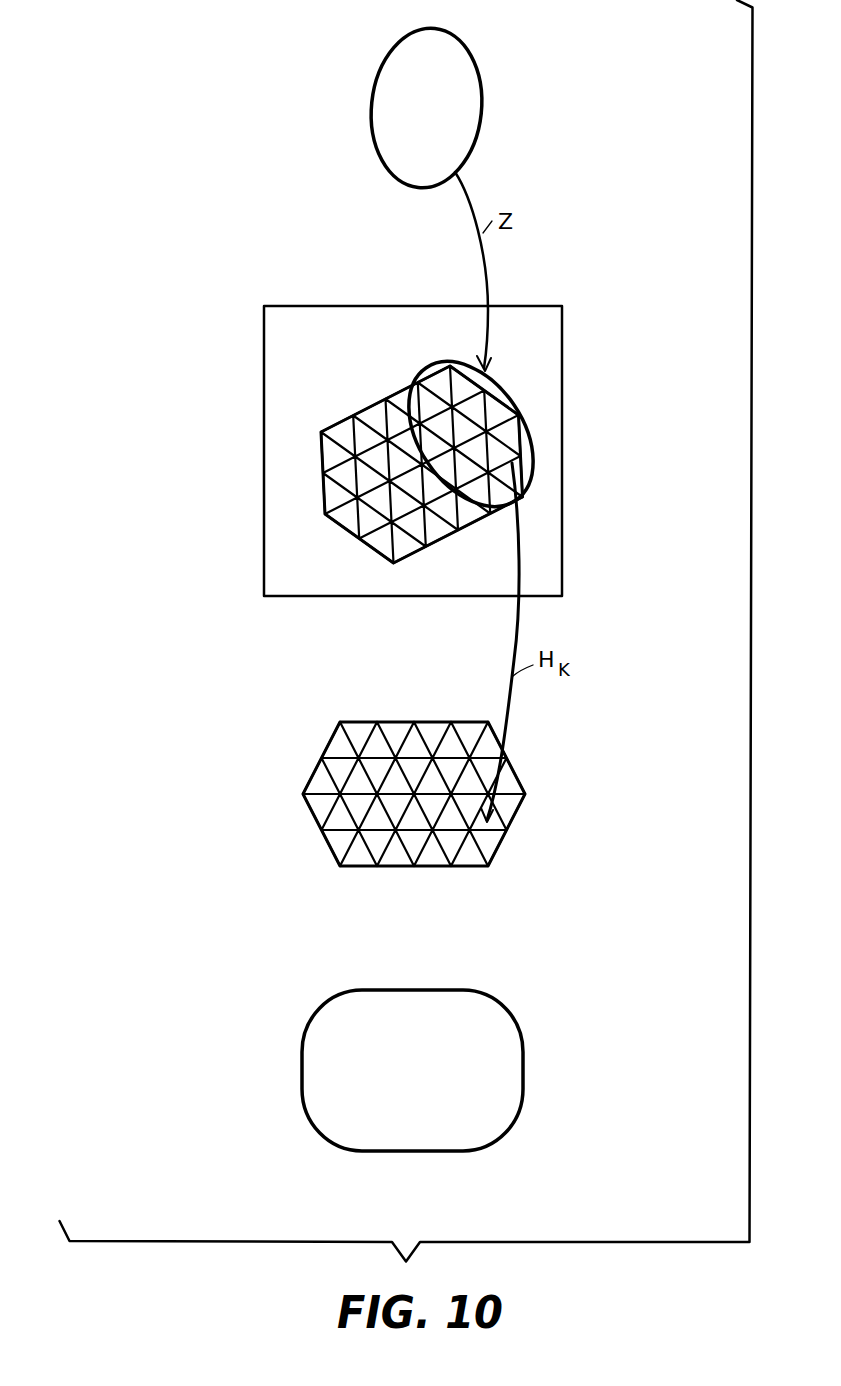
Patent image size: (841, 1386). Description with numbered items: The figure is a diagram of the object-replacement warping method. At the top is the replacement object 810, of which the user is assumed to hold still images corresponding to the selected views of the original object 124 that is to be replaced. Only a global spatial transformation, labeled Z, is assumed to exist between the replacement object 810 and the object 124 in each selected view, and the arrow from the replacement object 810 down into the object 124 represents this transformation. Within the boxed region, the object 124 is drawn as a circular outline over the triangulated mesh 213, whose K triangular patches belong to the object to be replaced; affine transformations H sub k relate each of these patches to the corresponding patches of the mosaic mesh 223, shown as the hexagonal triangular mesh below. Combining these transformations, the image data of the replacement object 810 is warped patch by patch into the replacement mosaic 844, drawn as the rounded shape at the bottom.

The replacement object 810 is at (470, 58).
The object to be replaced 124 is at (531, 434).
The transformed triangular mesh 213 is at (322, 475).
The mosaic mesh 223 is at (497, 847).
The replacement mosaic 844 is at (508, 1021).